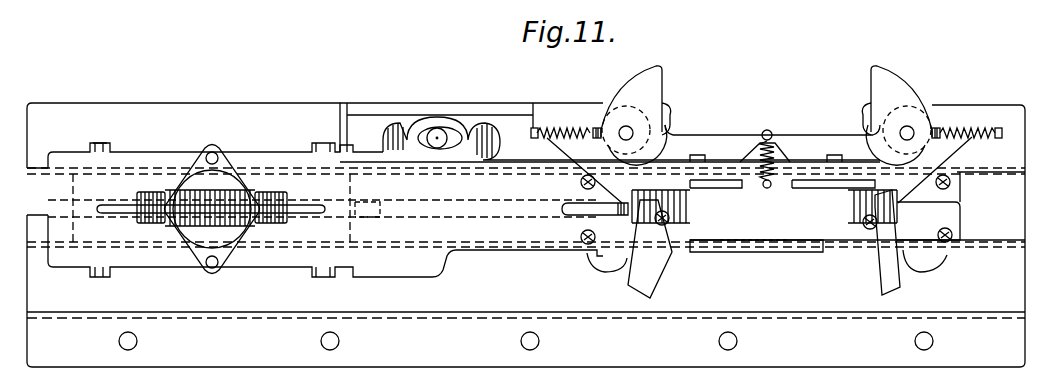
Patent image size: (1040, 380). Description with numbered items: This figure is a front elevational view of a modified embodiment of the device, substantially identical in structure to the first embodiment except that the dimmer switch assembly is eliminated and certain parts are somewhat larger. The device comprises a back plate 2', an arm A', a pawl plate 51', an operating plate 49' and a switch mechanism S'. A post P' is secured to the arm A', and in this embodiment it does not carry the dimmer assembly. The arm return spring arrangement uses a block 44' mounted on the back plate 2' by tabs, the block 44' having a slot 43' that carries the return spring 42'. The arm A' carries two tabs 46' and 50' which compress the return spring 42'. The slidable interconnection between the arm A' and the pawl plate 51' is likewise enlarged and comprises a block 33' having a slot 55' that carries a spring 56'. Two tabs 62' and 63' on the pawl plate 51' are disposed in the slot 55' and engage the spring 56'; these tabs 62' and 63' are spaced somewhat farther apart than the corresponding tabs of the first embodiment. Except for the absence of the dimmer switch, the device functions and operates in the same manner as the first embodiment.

The back plate 2' is at (526, 224).
The arm A' is at (526, 214).
The post P' is at (210, 174).
The switch mechanism S' is at (610, 115).
The tab 46' is at (208, 195).
The tab 50' is at (311, 189).
The slot 43' is at (144, 231).
The return spring 42' is at (271, 231).
The block 44' is at (381, 190).
The block 33' is at (579, 209).
The pawl plate 51' is at (772, 134).
The slot 55' is at (967, 189).
The tab 63' is at (857, 242).
The spring 56' is at (782, 216).
The operating plate 49' is at (764, 238).
The tab 62' is at (614, 249).